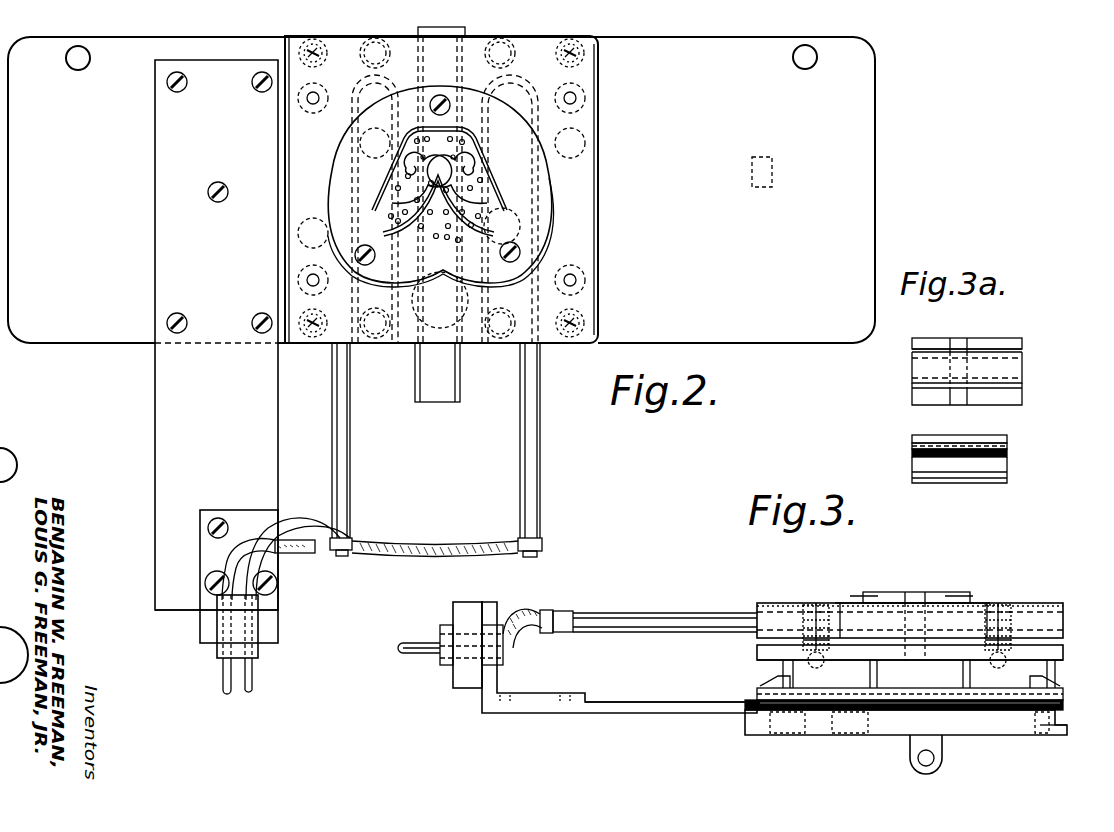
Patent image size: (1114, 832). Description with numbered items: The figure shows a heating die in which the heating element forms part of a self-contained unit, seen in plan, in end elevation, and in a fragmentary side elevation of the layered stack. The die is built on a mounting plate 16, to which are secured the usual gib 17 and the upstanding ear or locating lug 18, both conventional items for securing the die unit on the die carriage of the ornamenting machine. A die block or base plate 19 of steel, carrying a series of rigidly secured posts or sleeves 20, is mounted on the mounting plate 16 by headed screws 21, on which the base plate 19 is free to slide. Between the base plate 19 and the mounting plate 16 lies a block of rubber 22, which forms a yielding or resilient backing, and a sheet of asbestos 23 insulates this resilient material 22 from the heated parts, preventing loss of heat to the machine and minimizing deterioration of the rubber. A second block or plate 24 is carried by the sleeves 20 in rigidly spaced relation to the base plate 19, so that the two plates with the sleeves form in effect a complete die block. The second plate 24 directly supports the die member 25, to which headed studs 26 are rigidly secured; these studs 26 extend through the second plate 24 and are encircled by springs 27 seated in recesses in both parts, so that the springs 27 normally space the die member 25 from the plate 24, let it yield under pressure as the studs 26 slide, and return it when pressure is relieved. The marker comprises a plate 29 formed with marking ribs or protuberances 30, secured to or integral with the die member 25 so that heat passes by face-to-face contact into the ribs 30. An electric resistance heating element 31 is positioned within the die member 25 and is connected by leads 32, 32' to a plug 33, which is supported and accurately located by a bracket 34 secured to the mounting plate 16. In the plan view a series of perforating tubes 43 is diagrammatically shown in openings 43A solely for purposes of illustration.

In FIG. 2, the mounting plate 16 is at (865, 118).
In FIG. 3, the mounting plate 16 is at (988, 730).
In FIG. 3A, the mounting plate 16 is at (925, 460).
In FIG. 2, the gib 17 is at (436, 392).
In FIG. 3, the gib 17 is at (1050, 735).
In FIG. 3A, the gib 17 is at (1007, 478).
In FIG. 2, the locating lug 18 is at (775, 157).
In FIG. 3, the locating lug 18 is at (908, 759).
In FIG. 3, the die block 19 is at (757, 690).
In FIG. 3A, the die block 19 is at (1007, 438).
In FIG. 2, the posts or sleeves 20 is at (586, 143).
In FIG. 3, the posts or sleeves 20 is at (940, 680).
In FIG. 2, the headed screws 21 is at (600, 52).
In FIG. 3, the headed screws 21 is at (790, 674).
In FIG. 3, the block of rubber 22 is at (770, 710).
In FIG. 3A, the block of rubber 22 is at (1007, 455).
In FIG. 3, the sheet of asbestos 23 is at (757, 700).
In FIG. 3A, the sheet of asbestos 23 is at (1007, 447).
In FIG. 3, the second block or plate 24 is at (1035, 668).
In FIG. 3A, the second block or plate 24 is at (1020, 400).
In FIG. 2, the die member 25 is at (585, 229).
In FIG. 3, the die member 25 is at (1045, 600).
In FIG. 3A, the die member 25 is at (1022, 370).
In FIG. 2, the headed studs 26 is at (578, 98).
In FIG. 3, the headed studs 26 is at (812, 615).
In FIG. 2, the springs 27 is at (585, 110).
In FIG. 3, the springs 27 is at (792, 614).
In FIG. 2, the marker plate 29 is at (548, 202).
In FIG. 3, the marker plate 29 is at (998, 604).
In FIG. 3A, the marker plate 29 is at (1022, 350).
In FIG. 2, the marking ribs 30 is at (500, 177).
In FIG. 3, the marking ribs 30 is at (935, 596).
In FIG. 3A, the marking ribs 30 is at (1022, 342).
In FIG. 2, the electric resistance heating element 31 is at (520, 78).
In FIG. 3, the electric resistance heating element 31 is at (882, 612).
In FIG. 2, the lead 32 is at (394, 471).
In FIG. 3, the lead 32 is at (533, 613).
In FIG. 2, the lead 32' is at (286, 569).
In FIG. 3, the lead 32' is at (648, 637).
In FIG. 2, the plug 33 is at (262, 649).
In FIG. 3, the plug 33 is at (445, 648).
In FIG. 2, the bracket 34 is at (160, 432).
In FIG. 3, the bracket 34 is at (630, 722).
In FIG. 2, the perforating tubes 43 is at (478, 192).
In FIG. 3, the perforating tubes 43 is at (922, 652).
In FIG. 3, the openings 43A is at (918, 592).
In FIG. 3A, the openings 43A is at (958, 338).